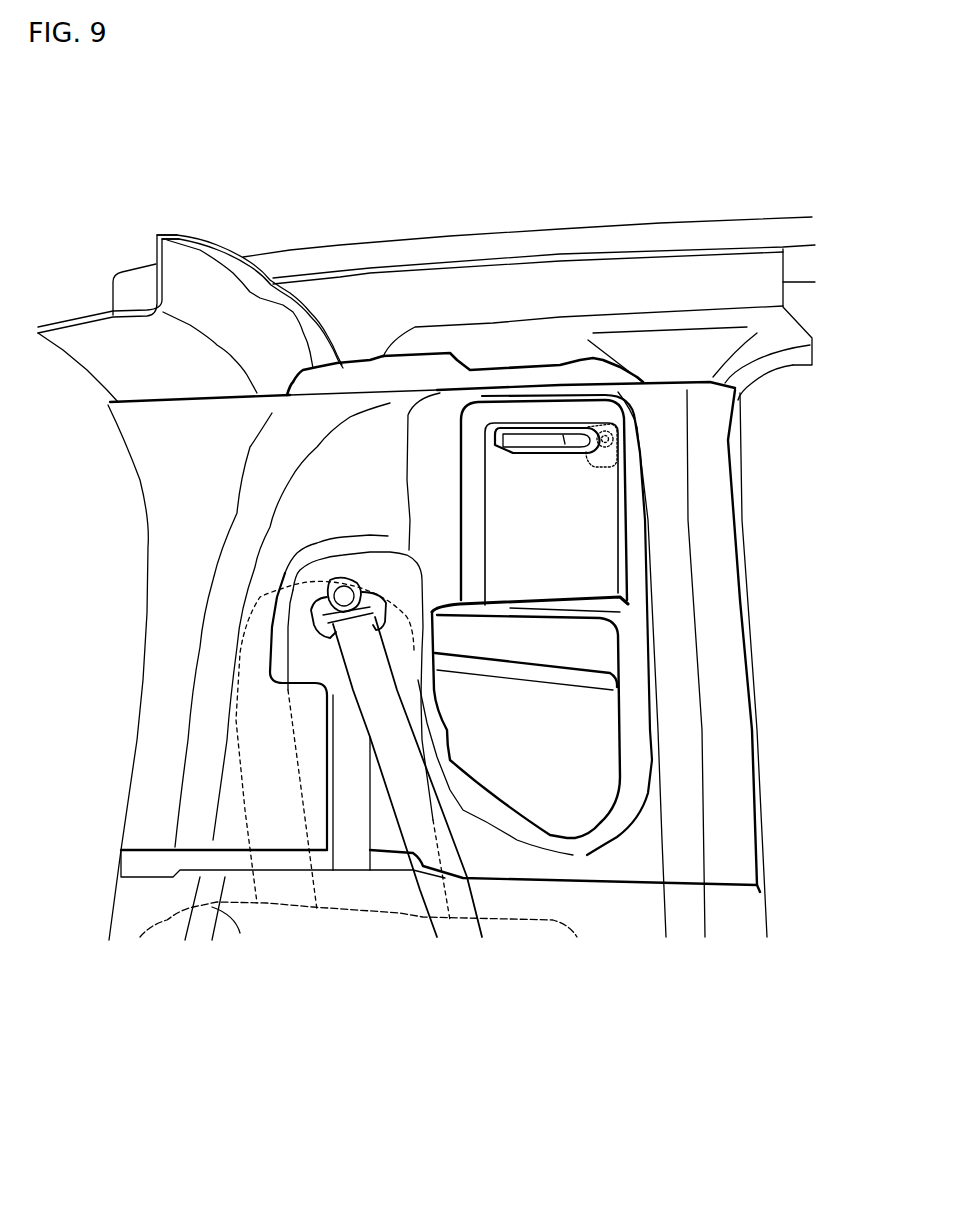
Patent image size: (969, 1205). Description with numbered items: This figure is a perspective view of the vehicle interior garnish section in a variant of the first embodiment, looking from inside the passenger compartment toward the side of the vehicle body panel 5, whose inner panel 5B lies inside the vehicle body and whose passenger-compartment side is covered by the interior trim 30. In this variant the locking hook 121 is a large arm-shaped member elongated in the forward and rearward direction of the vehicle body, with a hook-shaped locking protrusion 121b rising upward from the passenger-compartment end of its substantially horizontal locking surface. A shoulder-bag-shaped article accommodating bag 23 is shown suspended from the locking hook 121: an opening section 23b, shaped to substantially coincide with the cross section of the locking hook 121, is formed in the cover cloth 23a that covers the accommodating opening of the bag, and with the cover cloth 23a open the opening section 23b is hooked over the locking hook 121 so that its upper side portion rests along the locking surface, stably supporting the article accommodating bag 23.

The vehicle body panel 5 is at (470, 280).
The inner panel 5B is at (437, 343).
The locking hook 121 is at (538, 425).
The locking protrusion 121b is at (515, 423).
The article accommodating bag 23 is at (633, 665).
The cover cloth 23a is at (600, 513).
The opening section 23b is at (590, 465).
The interior trim 30 is at (617, 863).